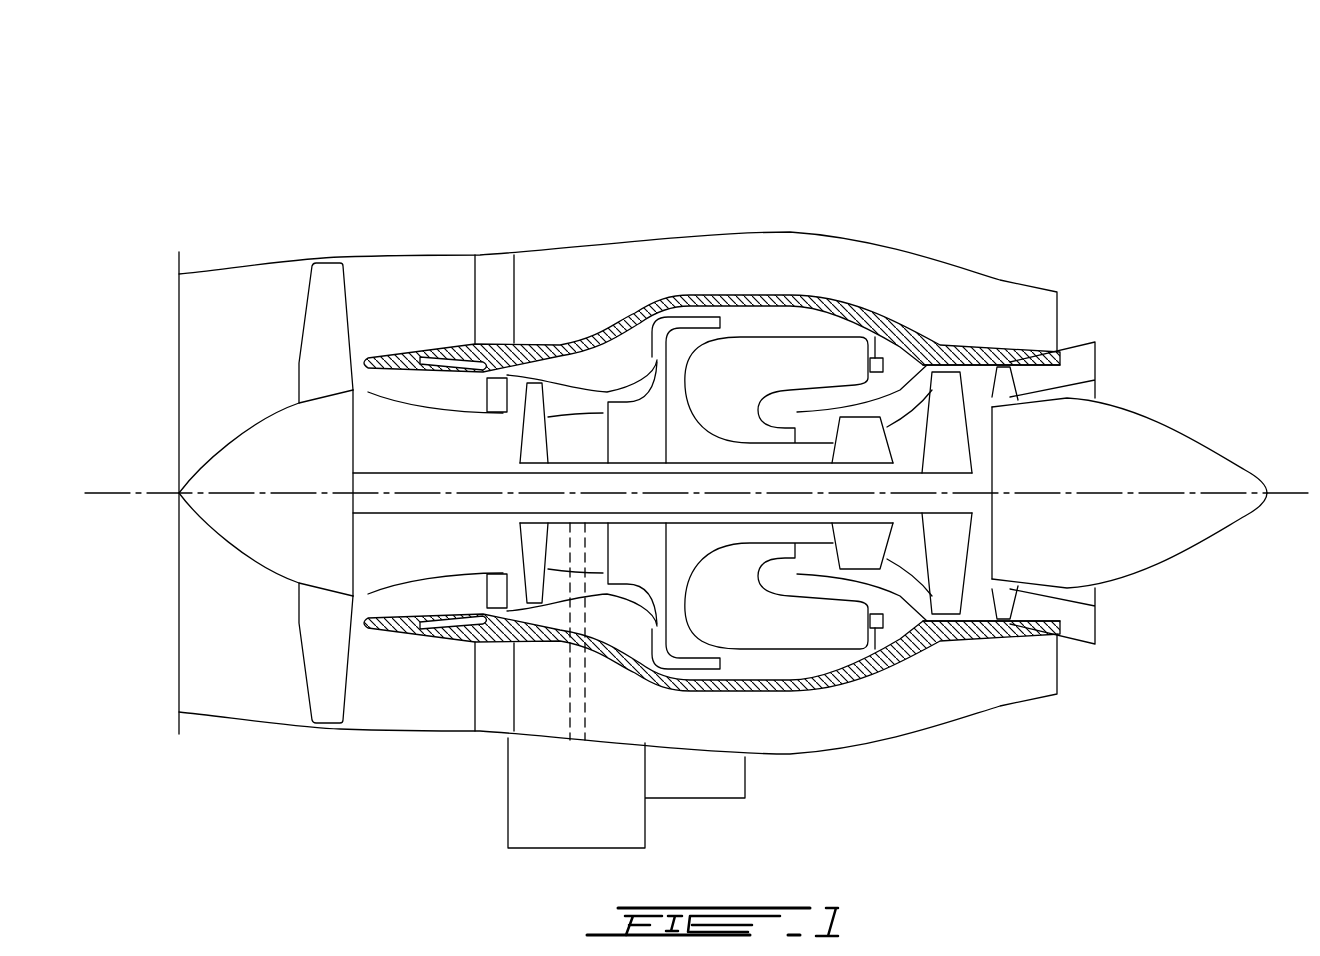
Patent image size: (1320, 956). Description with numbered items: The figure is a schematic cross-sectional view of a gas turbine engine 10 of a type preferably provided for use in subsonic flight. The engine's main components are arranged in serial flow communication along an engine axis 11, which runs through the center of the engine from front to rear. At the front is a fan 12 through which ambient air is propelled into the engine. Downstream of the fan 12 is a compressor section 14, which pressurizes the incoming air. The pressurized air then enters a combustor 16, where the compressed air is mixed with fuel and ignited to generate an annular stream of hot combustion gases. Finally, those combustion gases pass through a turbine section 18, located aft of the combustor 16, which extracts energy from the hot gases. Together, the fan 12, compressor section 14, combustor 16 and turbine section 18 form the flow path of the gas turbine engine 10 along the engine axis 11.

The gas turbine engine 10 is at (925, 152).
The engine axis 11 is at (130, 493).
The fan 12 is at (320, 640).
The compressor section 14 is at (568, 397).
The combustor 16 is at (772, 367).
The turbine section 18 is at (905, 557).